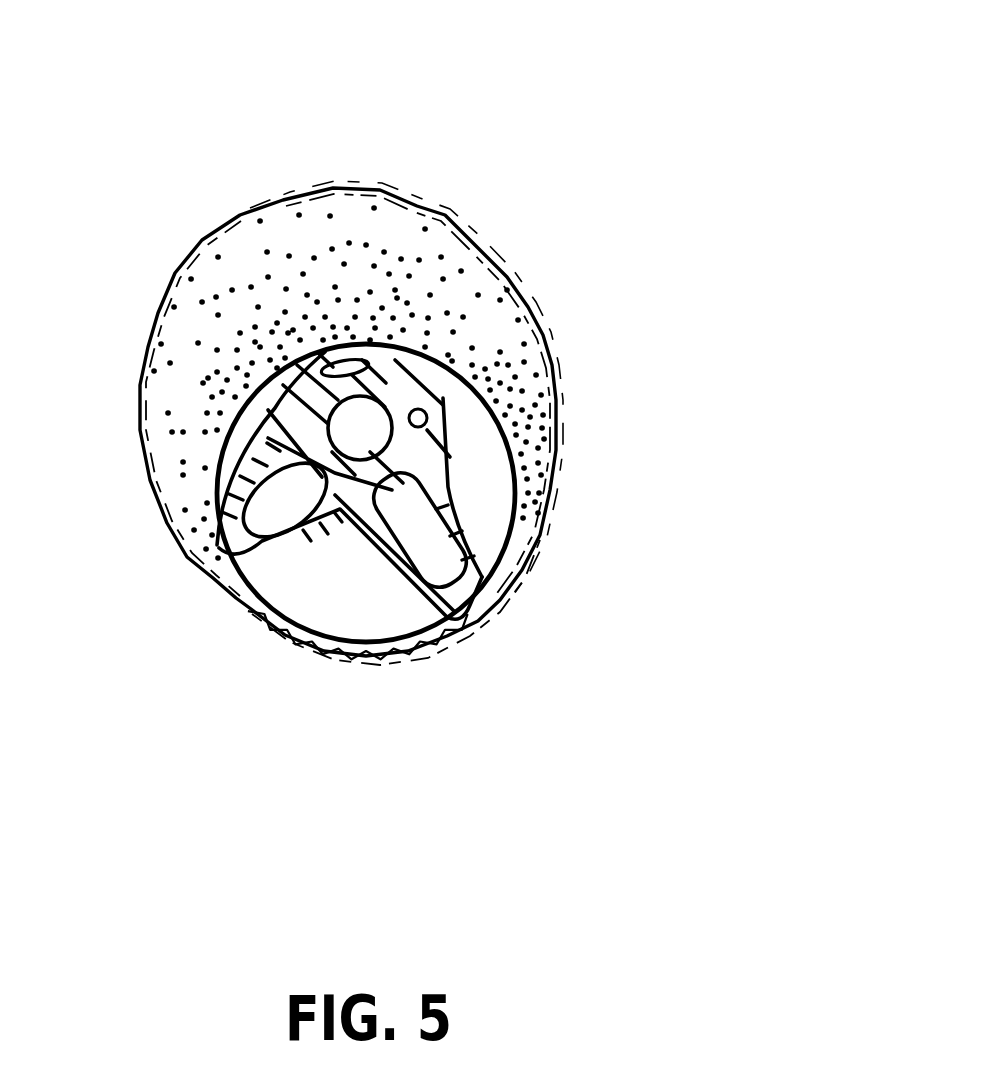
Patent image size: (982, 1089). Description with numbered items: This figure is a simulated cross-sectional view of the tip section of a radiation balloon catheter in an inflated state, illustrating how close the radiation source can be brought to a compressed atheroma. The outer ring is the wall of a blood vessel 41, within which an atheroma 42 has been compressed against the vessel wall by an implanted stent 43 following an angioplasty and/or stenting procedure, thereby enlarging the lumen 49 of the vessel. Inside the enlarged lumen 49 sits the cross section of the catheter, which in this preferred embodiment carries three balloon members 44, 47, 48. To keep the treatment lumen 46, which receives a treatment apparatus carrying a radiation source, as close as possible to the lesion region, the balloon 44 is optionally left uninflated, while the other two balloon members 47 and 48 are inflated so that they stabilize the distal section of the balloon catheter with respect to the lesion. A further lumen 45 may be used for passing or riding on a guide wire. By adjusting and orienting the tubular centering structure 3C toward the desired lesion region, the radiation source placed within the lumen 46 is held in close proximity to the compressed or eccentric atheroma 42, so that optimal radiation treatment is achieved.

The blood vessel 41 is at (423, 192).
The atheroma 42 is at (487, 290).
The stent 43 is at (512, 433).
The balloon member 44 is at (420, 331).
The lumen 45 is at (427, 414).
The treatment lumen 46 is at (345, 428).
The balloon member 47 is at (435, 513).
The balloon member 48 is at (258, 515).
The lumen 49 is at (287, 580).
The tubular centering structure 3C is at (486, 538).